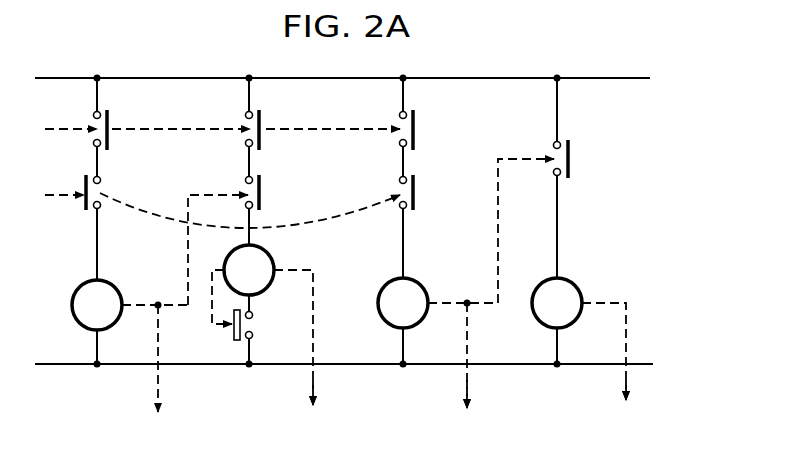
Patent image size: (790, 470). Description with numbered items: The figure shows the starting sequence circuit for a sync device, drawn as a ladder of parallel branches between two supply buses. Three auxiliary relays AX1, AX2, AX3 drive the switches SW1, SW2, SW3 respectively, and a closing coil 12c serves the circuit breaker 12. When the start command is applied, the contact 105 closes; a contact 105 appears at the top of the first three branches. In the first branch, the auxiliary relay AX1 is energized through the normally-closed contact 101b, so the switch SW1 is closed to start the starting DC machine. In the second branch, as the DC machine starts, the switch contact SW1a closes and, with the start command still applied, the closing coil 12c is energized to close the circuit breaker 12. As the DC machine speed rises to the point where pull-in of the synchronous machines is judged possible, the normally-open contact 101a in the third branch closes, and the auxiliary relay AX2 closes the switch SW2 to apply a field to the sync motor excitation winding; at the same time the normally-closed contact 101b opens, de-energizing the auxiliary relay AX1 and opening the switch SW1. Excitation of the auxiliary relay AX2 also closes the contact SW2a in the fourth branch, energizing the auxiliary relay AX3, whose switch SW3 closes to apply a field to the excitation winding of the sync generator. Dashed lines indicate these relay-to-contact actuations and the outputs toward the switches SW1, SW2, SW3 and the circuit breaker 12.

The contact 105 is at (109, 113).
The normally-closed contact 101b is at (99, 189).
The switch contact SW1a is at (261, 189).
The normally-open contact 101a is at (415, 187).
The contact SW2a is at (571, 160).
The auxiliary relay AX1 is at (135, 278).
The closing coil 12c is at (275, 263).
The auxiliary relay AX2 is at (440, 278).
The auxiliary relay AX3 is at (600, 278).
The switch SW1 is at (160, 378).
The circuit breaker 12 is at (314, 416).
The switch SW2 is at (471, 415).
The switch SW3 is at (630, 415).